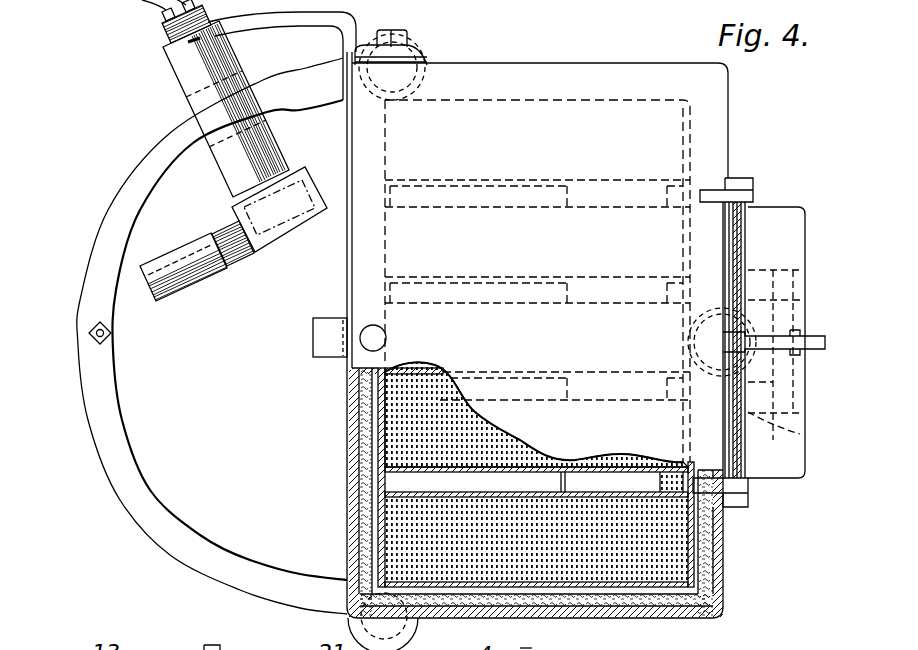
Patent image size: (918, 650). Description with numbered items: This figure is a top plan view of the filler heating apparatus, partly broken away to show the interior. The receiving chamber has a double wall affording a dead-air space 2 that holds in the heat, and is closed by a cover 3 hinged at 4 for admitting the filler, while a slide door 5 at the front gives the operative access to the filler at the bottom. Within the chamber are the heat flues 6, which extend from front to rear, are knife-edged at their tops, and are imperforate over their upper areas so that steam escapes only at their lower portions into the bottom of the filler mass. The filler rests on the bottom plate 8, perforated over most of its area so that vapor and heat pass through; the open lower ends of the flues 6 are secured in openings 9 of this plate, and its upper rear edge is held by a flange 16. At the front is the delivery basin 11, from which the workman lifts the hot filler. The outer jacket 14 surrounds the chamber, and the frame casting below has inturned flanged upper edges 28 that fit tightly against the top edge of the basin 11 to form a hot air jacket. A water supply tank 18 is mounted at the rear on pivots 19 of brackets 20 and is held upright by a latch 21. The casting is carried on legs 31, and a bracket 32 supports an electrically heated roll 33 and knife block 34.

The dead-air space 2 is at (376, 412).
The cover 3 is at (537, 281).
The hinge 4 is at (740, 225).
The slide door 5 is at (348, 375).
The heat flues 6 is at (470, 465).
The bottom plate 8 is at (410, 440).
The openings 9 is at (585, 478).
The delivery basin 11 is at (226, 370).
The outer jacket 14 is at (423, 528).
The flange 16 is at (682, 542).
The water supply tank 18 is at (802, 222).
The pivots 19 is at (787, 368).
The brackets 20 is at (801, 434).
The latch 21 is at (824, 337).
The flanged upper edges 28 is at (137, 420).
The legs 31 is at (408, 626).
The bracket 32 is at (346, 42).
The roll 33 is at (190, 100).
The knife block 34 is at (233, 234).